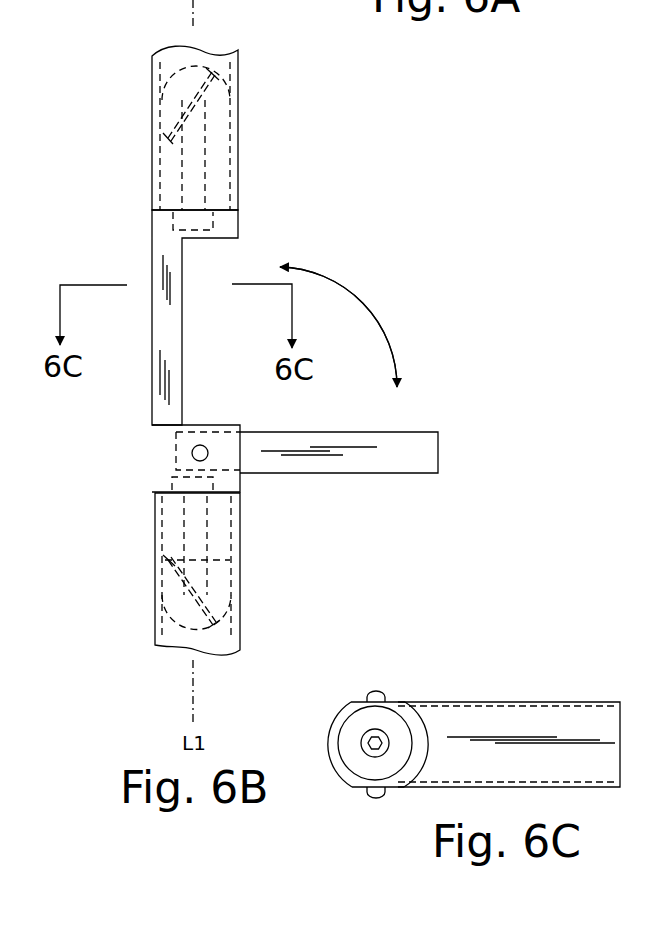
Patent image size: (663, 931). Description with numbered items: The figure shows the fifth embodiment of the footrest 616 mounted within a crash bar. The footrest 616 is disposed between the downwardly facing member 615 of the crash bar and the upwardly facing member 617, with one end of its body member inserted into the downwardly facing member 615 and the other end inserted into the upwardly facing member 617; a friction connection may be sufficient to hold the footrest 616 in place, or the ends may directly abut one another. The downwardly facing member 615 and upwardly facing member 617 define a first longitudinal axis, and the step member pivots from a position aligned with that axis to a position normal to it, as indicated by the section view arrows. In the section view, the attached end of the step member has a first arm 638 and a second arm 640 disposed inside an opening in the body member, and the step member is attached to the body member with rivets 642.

In FIG. 6B, the downwardly facing member 615 is at (152, 115).
In FIG. 6B, the footrest 616 is at (125, 260).
In FIG. 6B, the upwardly facing member 617 is at (155, 560).
In FIG. 6C, the first arm 638 is at (392, 700).
In FIG. 6B, the second arm 640 is at (182, 440).
In FIG. 6C, the second arm 640 is at (388, 792).
In FIG. 6C, the rivets 642 is at (375, 692).